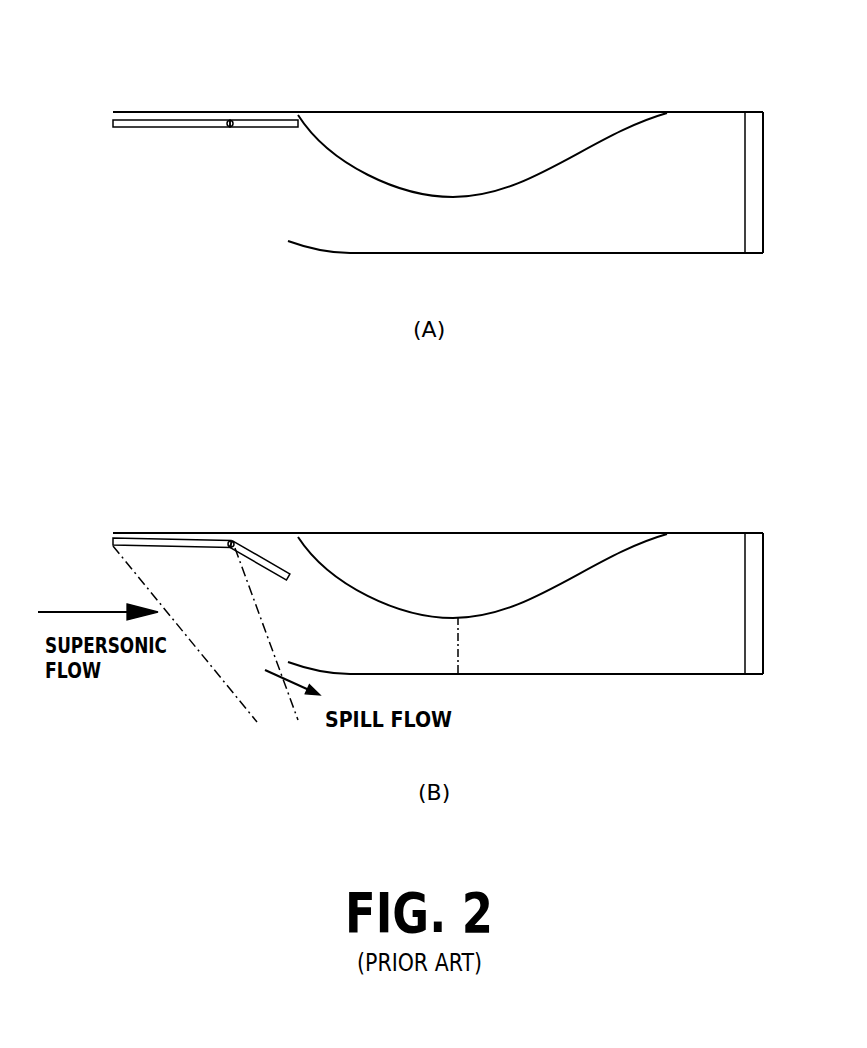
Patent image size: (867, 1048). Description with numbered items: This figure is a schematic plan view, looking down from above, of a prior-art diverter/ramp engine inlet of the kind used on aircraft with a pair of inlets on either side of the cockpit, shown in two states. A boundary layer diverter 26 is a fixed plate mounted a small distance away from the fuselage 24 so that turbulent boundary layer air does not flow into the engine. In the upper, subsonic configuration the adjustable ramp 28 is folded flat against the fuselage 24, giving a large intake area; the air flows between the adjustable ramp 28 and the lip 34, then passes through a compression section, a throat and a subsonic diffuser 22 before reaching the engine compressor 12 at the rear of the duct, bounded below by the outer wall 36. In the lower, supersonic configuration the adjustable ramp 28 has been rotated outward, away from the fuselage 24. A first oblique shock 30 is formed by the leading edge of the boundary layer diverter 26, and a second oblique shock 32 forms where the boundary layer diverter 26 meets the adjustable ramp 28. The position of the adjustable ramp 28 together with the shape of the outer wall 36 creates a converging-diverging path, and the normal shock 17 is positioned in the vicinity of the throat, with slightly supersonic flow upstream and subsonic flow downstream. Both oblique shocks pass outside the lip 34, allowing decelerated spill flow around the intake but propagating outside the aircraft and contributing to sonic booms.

The engine compressor 12 is at (438, 154).
The normal shock 17 is at (507, 667).
The subsonic diffuser 22 is at (482, 131).
The fuselage 24 is at (438, 73).
The boundary layer diverter 26 is at (148, 295).
The adjustable ramp 28 is at (251, 307).
The first oblique shock 30 is at (185, 634).
The second oblique shock 32 is at (258, 658).
The lip 34 is at (278, 274).
The outer wall 36 is at (556, 279).